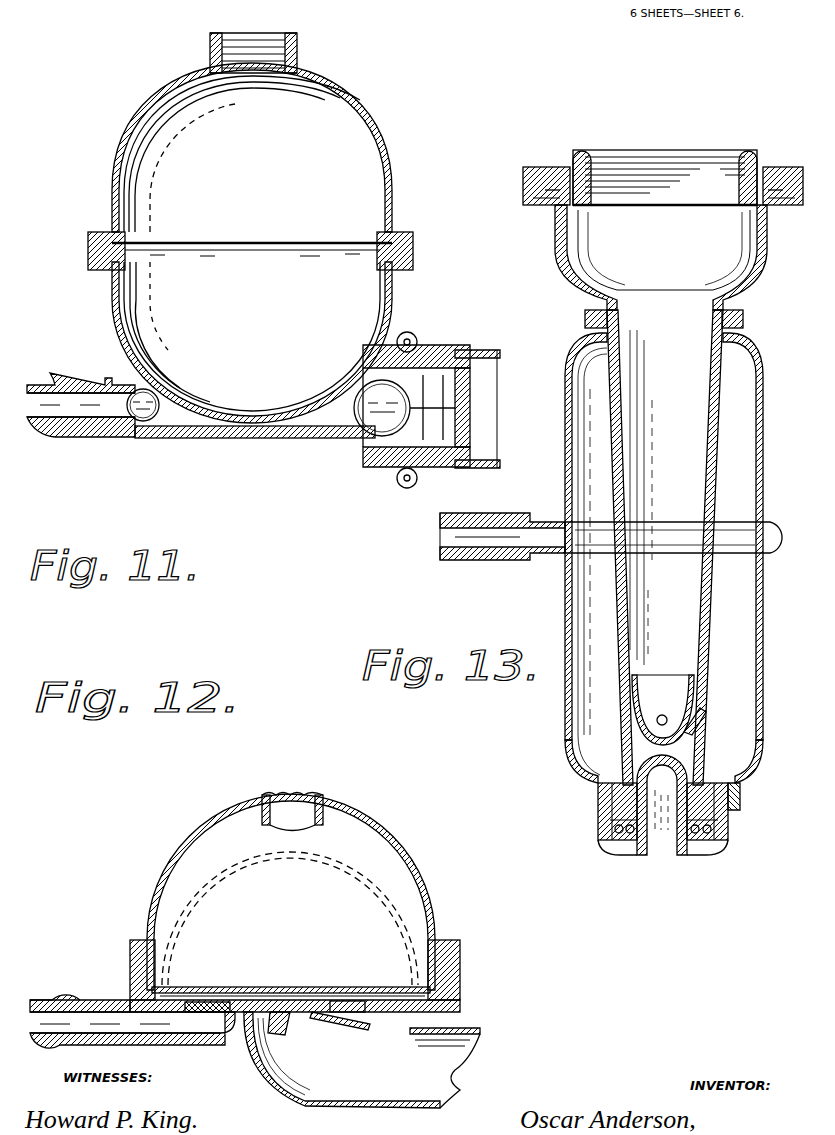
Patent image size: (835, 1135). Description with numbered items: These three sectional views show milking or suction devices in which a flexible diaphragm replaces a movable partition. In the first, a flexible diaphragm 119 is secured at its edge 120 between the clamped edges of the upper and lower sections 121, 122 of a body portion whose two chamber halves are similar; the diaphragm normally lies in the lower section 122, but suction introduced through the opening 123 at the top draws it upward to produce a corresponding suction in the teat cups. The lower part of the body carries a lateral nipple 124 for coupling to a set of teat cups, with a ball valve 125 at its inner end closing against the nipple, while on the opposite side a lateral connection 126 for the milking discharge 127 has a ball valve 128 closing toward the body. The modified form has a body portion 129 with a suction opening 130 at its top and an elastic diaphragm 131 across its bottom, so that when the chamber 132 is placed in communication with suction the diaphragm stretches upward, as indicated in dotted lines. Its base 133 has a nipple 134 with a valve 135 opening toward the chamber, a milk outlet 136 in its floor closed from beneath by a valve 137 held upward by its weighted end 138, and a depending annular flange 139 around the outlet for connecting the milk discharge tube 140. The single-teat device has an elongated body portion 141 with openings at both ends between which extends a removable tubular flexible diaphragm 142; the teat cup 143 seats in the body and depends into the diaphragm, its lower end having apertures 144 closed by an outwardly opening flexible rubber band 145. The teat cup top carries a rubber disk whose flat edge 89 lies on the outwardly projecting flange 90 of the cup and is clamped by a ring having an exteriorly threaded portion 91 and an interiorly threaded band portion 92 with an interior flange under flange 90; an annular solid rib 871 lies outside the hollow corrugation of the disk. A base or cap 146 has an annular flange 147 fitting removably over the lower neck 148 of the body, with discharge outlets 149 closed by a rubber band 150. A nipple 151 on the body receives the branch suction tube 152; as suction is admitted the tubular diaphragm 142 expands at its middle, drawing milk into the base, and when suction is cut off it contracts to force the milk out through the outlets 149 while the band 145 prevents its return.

In FIG. 13, the annular solid rib 871 is at (592, 160).
In FIG. 13, the annular exteriorly threaded portion 91 is at (580, 165).
In FIG. 13, the band portion 92 is at (530, 170).
In FIG. 13, the flat edge 89 is at (540, 178).
In FIG. 13, the outwardly projecting flange 90 is at (530, 200).
In FIG. 11, the flexible diaphragm 119 is at (200, 430).
In FIG. 11, the edge of diaphragm 120 is at (413, 250).
In FIG. 11, the upper section 121 is at (388, 150).
In FIG. 11, the lower section 122 is at (388, 320).
In FIG. 11, the opening 123 is at (297, 48).
In FIG. 11, the lateral nipple 124 is at (60, 435).
In FIG. 11, the ball valve 125 is at (150, 421).
In FIG. 11, the lateral connection 126 is at (375, 460).
In FIG. 11, the milking discharge 127 is at (478, 350).
In FIG. 11, the ball valve 128 is at (360, 415).
In FIG. 12, the body portion 129 is at (428, 880).
In FIG. 12, the suction opening 130 is at (305, 810).
In FIG. 12, the elastic diaphragm 131 is at (208, 878).
In FIG. 12, the chamber 132 is at (360, 855).
In FIG. 12, the base 133 is at (460, 985).
In FIG. 12, the nipple 134 is at (70, 1000).
In FIG. 12, the valve 135 is at (210, 1013).
In FIG. 12, the milk outlet 136 is at (350, 1001).
In FIG. 12, the valve 137 is at (340, 1030).
In FIG. 12, the weighted end 138 is at (276, 1030).
In FIG. 12, the depending annular flange 139 is at (395, 1018).
In FIG. 12, the milk discharge tube 140 is at (450, 1085).
In FIG. 13, the body portion 141 is at (758, 620).
In FIG. 13, the tubular flexible diaphragm 142 is at (715, 485).
In FIG. 13, the teat cup 143 is at (672, 390).
In FIG. 13, the apertures 144 is at (667, 718).
In FIG. 13, the flexible rubber band 145 is at (700, 730).
In FIG. 13, the base or cap 146 is at (628, 852).
In FIG. 13, the annular flange 147 is at (730, 812).
In FIG. 13, the lower neck 148 is at (738, 790).
In FIG. 13, the discharge outlets 149 is at (697, 838).
In FIG. 13, the rubber band 150 is at (597, 810).
In FIG. 13, the nipple 151 is at (545, 553).
In FIG. 13, the branch suction tube 152 is at (455, 560).